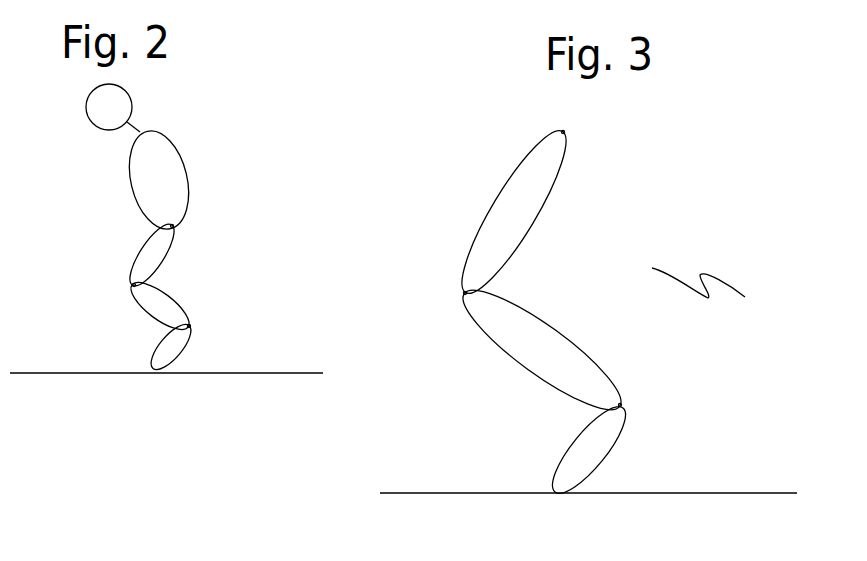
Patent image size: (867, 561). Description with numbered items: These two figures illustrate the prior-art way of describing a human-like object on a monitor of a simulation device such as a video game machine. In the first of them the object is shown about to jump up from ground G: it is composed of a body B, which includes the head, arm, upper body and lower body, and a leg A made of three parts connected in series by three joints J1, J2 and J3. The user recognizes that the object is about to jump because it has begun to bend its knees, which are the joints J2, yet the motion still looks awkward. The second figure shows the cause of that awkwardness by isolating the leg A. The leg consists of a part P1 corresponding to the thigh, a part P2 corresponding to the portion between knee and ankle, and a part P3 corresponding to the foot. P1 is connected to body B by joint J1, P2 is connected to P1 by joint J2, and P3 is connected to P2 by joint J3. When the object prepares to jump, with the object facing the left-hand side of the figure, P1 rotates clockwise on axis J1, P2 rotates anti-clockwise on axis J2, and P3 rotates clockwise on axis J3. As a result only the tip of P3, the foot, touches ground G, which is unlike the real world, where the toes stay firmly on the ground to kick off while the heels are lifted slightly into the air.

In FIG. 2, the body B is at (178, 153).
In FIG. 2, the joint J1 is at (178, 227).
In FIG. 3, the joint J1 is at (570, 128).
In FIG. 2, the joint J2 is at (145, 285).
In FIG. 3, the joint J2 is at (470, 293).
In FIG. 2, the joint J3 is at (188, 320).
In FIG. 3, the joint J3 is at (620, 405).
In FIG. 2, the ground G is at (166, 390).
In FIG. 3, the ground G is at (588, 513).
In FIG. 3, the part corresponding to thigh P1 is at (503, 187).
In FIG. 3, the part corresponding to portion between knee and ankle P2 is at (485, 338).
In FIG. 3, the part corresponding to foot P3 is at (575, 442).
In FIG. 3, the leg A is at (707, 298).